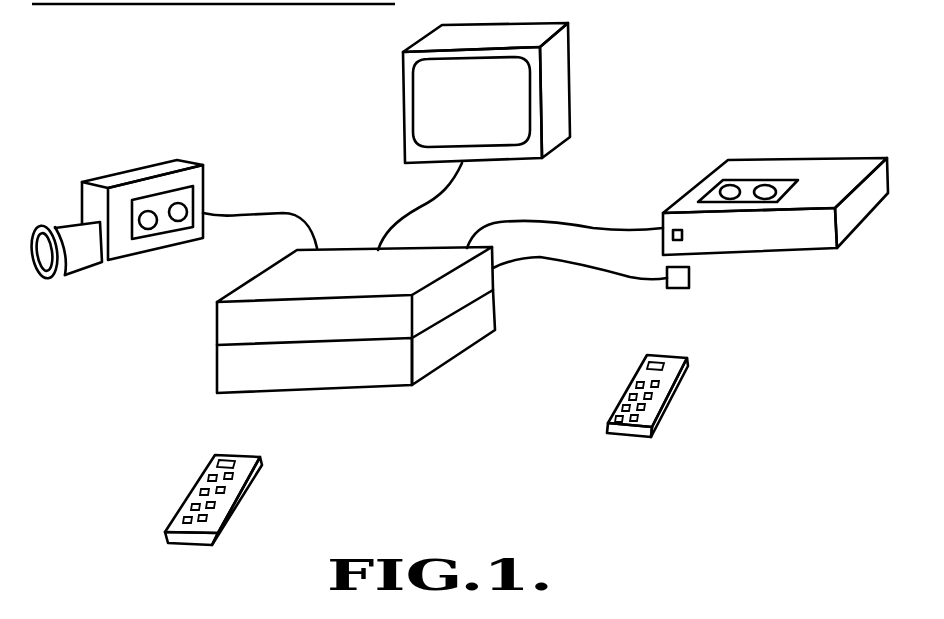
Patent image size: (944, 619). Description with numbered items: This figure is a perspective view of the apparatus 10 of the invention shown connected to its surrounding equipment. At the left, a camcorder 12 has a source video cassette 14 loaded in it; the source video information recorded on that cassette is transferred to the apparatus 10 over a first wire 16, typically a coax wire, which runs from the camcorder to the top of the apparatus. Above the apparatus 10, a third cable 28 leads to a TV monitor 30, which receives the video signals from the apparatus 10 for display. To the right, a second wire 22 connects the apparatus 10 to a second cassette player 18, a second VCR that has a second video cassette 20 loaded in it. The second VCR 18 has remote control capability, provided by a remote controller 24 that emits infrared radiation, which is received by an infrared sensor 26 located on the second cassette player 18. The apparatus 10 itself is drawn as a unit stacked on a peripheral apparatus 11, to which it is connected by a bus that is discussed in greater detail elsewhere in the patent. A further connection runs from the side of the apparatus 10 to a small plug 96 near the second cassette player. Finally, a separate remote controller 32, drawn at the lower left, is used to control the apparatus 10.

The apparatus 10 is at (217, 317).
The peripheral apparatus 11 is at (217, 362).
The camcorder 12 is at (155, 160).
The source video cassette 14 is at (198, 197).
The first wire 16 is at (278, 207).
The second cassette player 18 is at (845, 162).
The second video cassette 20 is at (768, 200).
The second wire 22 is at (562, 223).
The remote controller 24 is at (668, 402).
The infrared sensor 26 is at (682, 235).
The third cable 28 is at (417, 205).
The TV monitor 30 is at (568, 88).
The remote controller 32 is at (250, 482).
The connector plug 96 is at (672, 290).